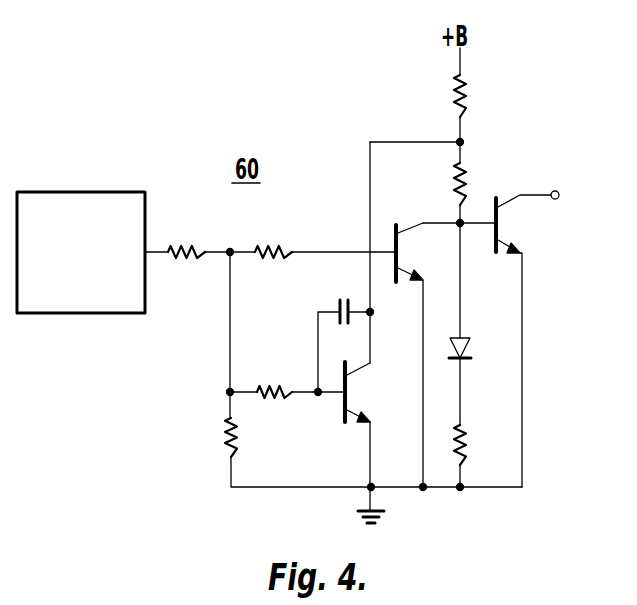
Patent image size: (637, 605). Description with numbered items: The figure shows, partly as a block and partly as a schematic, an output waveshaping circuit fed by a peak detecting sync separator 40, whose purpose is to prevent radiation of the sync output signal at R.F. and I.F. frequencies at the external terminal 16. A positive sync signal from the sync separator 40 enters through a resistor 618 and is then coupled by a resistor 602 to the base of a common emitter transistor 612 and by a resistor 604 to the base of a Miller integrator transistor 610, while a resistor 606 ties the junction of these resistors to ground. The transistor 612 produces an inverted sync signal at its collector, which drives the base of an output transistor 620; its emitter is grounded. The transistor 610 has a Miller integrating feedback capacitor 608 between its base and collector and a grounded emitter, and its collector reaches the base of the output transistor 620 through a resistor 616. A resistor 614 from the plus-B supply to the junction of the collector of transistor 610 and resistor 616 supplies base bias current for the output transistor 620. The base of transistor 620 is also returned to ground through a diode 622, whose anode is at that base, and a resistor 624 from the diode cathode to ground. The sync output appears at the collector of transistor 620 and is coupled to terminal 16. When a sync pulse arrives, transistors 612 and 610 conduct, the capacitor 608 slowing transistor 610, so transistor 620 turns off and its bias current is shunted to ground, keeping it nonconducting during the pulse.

The sync separator 40 is at (80, 192).
The external terminal 16 is at (554, 191).
The resistor 602 is at (272, 244).
The resistor 604 is at (277, 400).
The resistor 606 is at (239, 444).
The feedback capacitor 608 is at (344, 299).
The Miller integrator transistor 610 is at (349, 400).
The common emitter transistor 612 is at (404, 253).
The resistor 614 is at (466, 97).
The resistor 616 is at (454, 184).
The resistor 618 is at (183, 244).
The output transistor 620 is at (500, 234).
The diode 622 is at (468, 346).
The resistor 624 is at (468, 438).